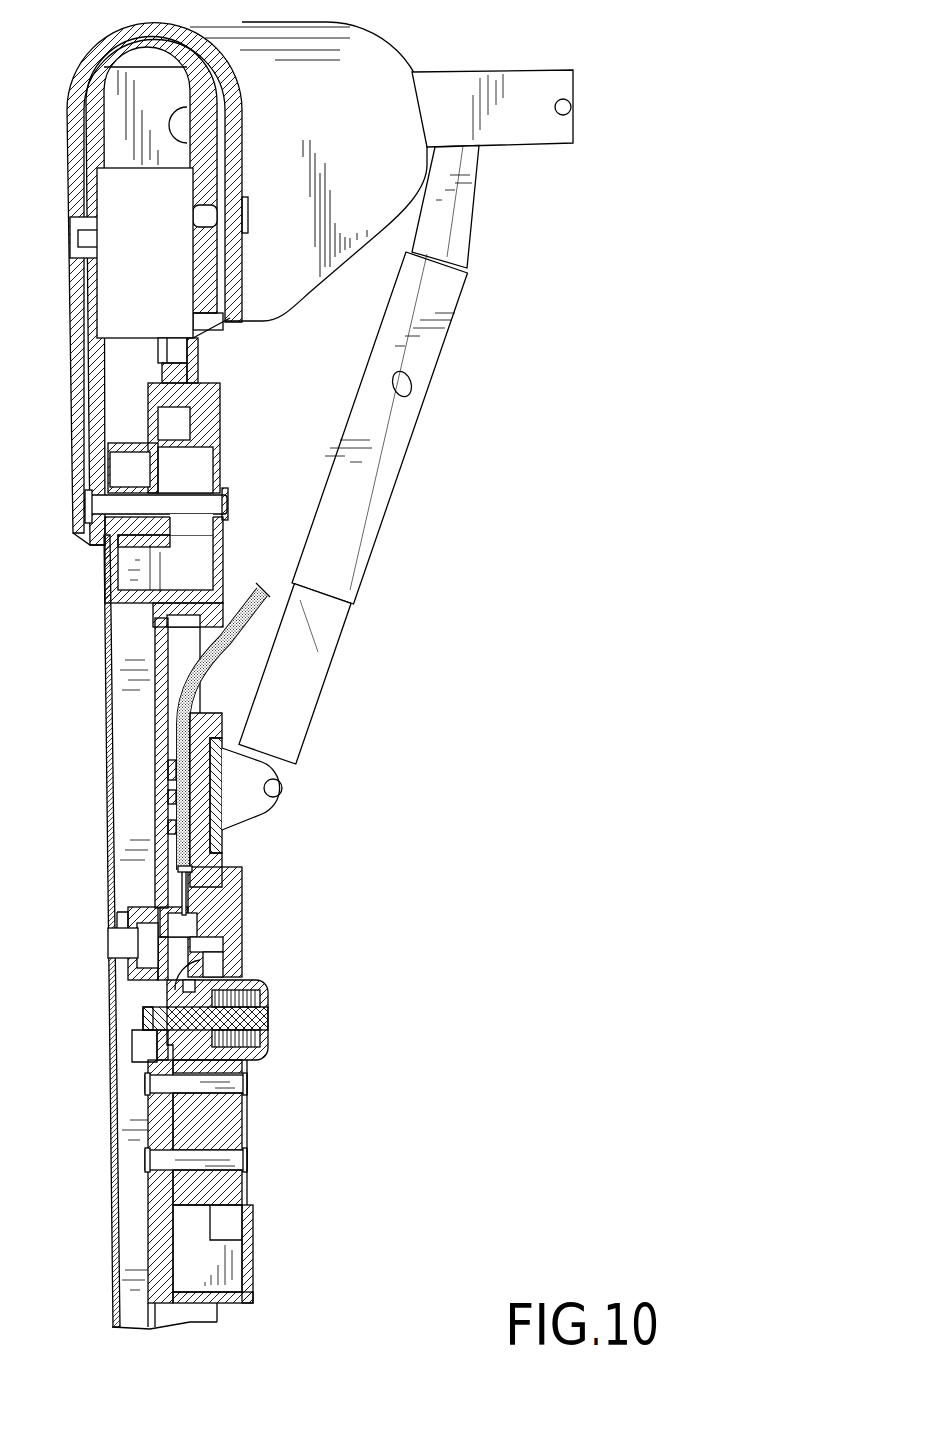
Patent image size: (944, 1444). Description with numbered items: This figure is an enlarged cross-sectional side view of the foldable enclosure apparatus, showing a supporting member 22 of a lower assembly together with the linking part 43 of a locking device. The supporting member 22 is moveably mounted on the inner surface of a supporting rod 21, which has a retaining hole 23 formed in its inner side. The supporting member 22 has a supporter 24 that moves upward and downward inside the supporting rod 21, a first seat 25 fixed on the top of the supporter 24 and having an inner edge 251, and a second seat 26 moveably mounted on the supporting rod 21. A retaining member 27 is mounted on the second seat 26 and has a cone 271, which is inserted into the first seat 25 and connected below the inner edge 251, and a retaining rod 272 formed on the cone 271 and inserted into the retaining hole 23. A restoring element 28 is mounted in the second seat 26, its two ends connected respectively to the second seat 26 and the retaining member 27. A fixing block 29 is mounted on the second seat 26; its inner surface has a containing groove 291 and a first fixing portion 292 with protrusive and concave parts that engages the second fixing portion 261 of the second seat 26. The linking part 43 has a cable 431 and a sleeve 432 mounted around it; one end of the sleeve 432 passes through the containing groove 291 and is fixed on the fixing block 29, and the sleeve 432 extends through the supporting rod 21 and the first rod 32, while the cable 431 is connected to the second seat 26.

The supporting rod 21 is at (115, 1108).
The supporting member 22 is at (133, 1236).
The retaining hole 23 is at (142, 994).
The supporter 24 is at (153, 1310).
The first seat 25 is at (193, 1224).
The inner edge 251 is at (186, 992).
The second seat 26 is at (257, 946).
The second fixing portion 261 is at (172, 772).
The retaining member 27 is at (284, 1023).
The cone 271 is at (175, 992).
The retaining rod 272 is at (145, 1025).
The restoring element 28 is at (253, 1055).
The fixing block 29 is at (227, 791).
The containing groove 291 is at (186, 692).
The first fixing portion 292 is at (172, 795).
The first rod 32 is at (540, 78).
The linking part 43 is at (277, 663).
The cable 431 is at (182, 892).
The sleeve 432 is at (290, 605).